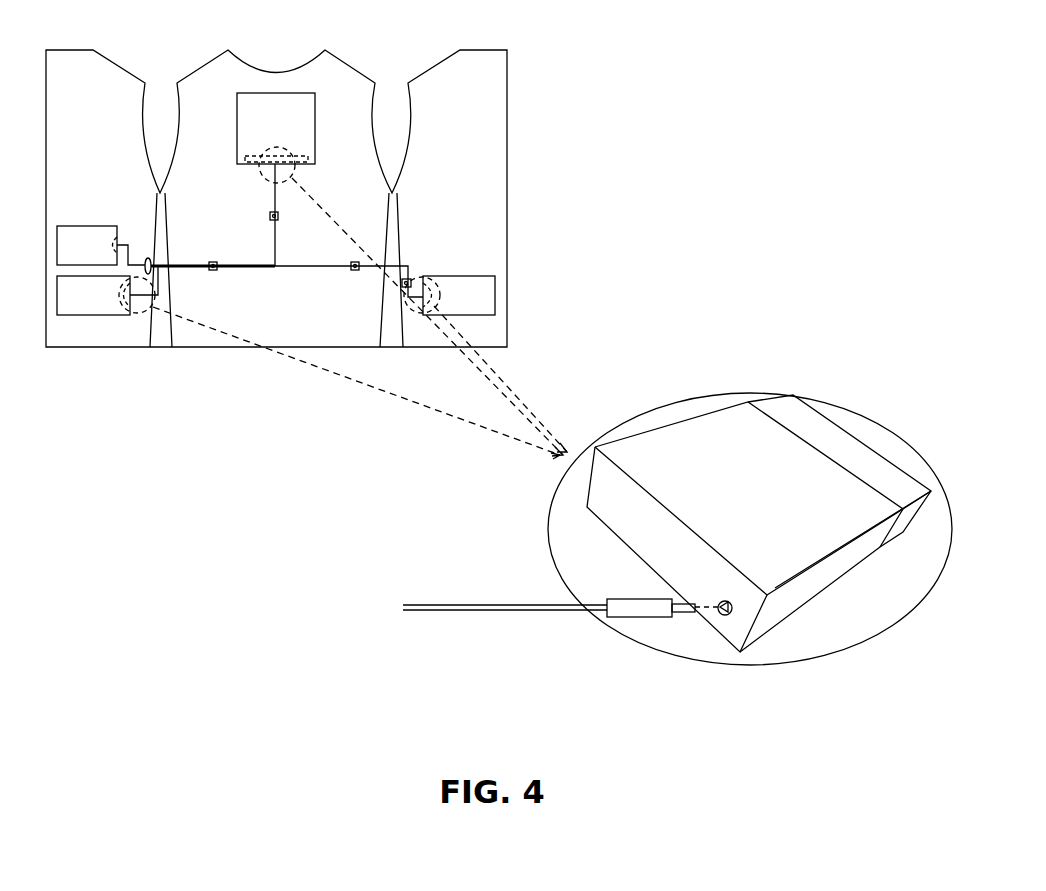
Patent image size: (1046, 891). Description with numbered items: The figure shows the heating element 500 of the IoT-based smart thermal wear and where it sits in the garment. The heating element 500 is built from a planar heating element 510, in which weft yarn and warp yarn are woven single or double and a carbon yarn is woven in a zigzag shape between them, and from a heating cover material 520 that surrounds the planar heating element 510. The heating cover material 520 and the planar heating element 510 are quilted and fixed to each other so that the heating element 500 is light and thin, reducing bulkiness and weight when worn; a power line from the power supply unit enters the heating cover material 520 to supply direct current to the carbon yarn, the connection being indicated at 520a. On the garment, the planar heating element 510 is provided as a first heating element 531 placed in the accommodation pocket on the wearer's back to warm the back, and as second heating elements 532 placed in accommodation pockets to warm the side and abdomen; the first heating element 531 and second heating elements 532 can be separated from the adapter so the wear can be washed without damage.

The heating element 500 is at (718, 287).
The planar heating element 510 is at (790, 412).
The heating cover material 520 is at (698, 442).
The connection terminal 520a is at (725, 616).
The first heating element 531 is at (103, 295).
The second heating element 532 is at (277, 118).